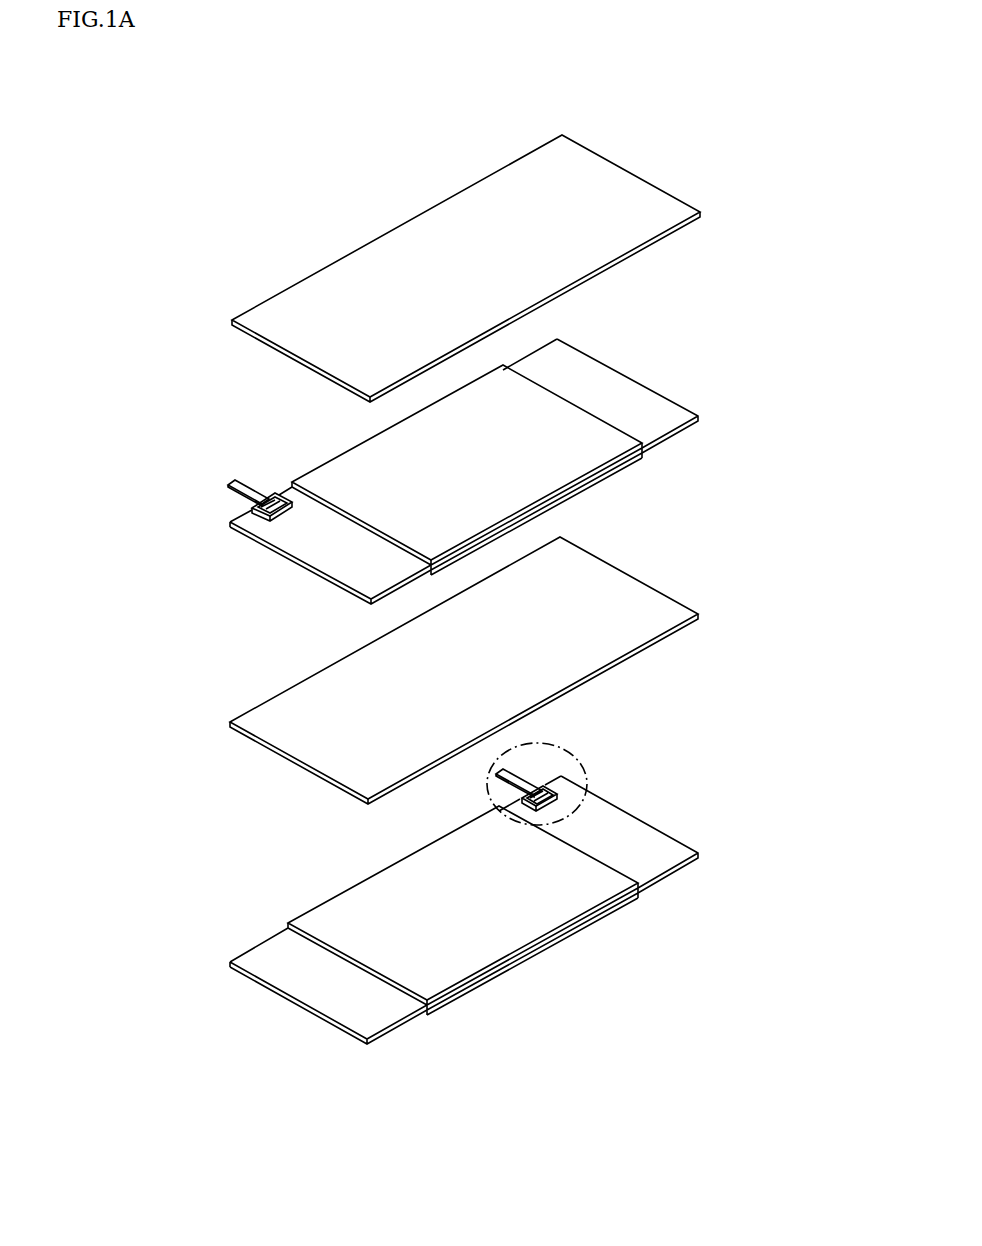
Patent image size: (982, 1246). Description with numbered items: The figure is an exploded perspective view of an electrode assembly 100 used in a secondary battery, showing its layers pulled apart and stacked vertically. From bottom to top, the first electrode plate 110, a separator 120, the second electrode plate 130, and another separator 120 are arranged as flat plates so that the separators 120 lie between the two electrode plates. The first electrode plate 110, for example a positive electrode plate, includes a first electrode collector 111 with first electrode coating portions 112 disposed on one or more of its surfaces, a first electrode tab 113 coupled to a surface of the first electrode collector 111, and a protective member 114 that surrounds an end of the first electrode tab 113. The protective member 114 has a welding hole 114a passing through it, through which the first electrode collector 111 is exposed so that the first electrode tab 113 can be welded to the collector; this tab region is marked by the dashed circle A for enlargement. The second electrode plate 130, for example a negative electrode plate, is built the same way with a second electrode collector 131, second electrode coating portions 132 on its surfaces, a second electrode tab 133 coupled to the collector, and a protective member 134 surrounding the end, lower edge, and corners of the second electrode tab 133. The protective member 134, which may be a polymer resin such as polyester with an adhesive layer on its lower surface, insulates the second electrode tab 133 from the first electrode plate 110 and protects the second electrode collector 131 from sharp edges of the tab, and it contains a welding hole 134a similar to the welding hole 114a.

The electrode assembly 100 is at (244, 150).
The first electrode plate 110 is at (294, 1014).
The first electrode collector 111 is at (388, 1008).
The first electrode coating portions 112 is at (477, 988).
The first electrode tab 113 is at (512, 771).
The protective member 114 is at (557, 794).
The welding hole 114a is at (541, 784).
The separators 120 is at (383, 240).
The second electrode plate 130 is at (649, 366).
The second electrode collector 131 is at (307, 550).
The second electrode coating portions 132 is at (323, 473).
The second electrode tab 133 is at (238, 482).
The protective member 134 is at (253, 517).
The welding hole 134a is at (260, 502).
The enlarged region A is at (589, 777).